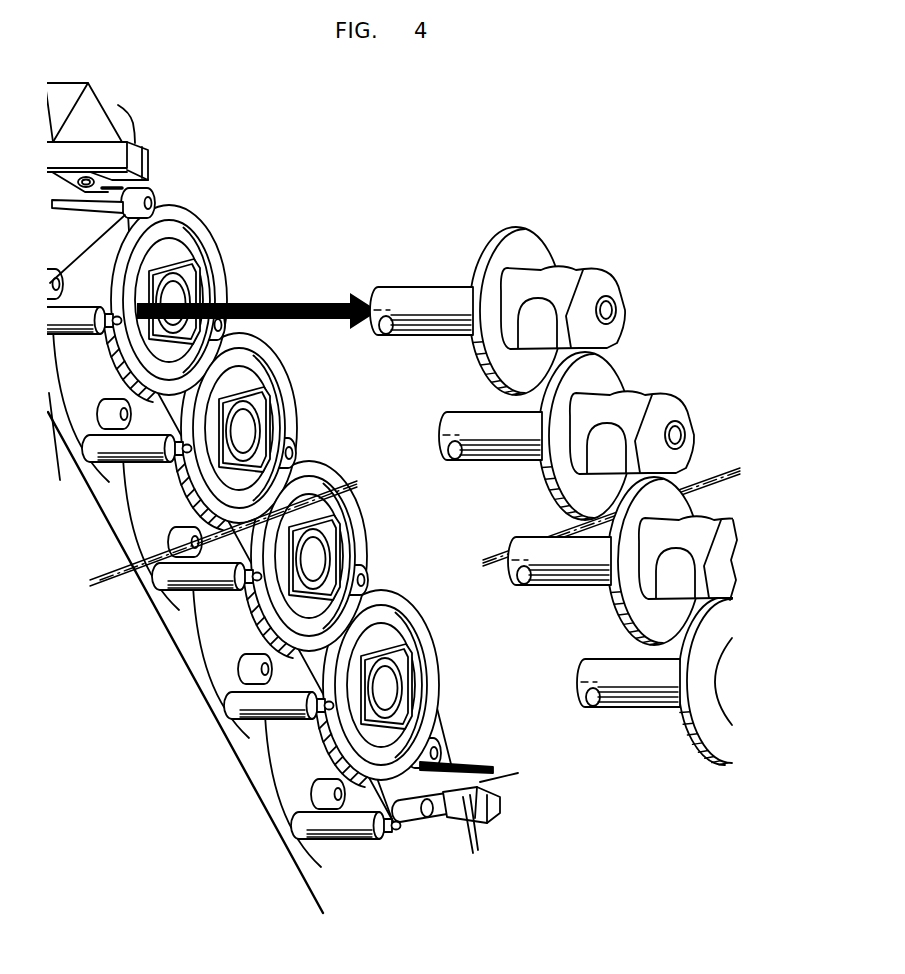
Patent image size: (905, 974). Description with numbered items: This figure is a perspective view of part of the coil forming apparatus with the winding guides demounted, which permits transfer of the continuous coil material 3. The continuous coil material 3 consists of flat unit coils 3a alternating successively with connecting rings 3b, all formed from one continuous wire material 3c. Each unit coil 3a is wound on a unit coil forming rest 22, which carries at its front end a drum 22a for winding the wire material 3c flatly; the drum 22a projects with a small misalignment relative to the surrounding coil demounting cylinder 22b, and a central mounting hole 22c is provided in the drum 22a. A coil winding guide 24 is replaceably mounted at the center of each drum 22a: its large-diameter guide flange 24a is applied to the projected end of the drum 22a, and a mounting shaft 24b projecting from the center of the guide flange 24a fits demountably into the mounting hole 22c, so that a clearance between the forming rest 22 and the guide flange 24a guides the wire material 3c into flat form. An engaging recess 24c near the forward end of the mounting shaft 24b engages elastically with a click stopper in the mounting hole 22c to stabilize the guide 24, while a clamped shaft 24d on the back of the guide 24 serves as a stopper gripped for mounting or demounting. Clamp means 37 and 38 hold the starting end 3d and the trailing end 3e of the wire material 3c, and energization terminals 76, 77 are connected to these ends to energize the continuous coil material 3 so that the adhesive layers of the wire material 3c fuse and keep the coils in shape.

The continuous coil material 3 is at (225, 693).
The unit coil 3a is at (175, 263).
The connecting ring 3b is at (120, 318).
The wire material 3c is at (375, 827).
The starting end of the wire material 3d is at (510, 772).
The trailing end of the wire material 3e is at (130, 120).
The unit coil forming rest 22 is at (160, 477).
The drum 22a is at (182, 270).
The coil demounting cylinder 22b is at (205, 295).
The central mounting hole 22c is at (190, 290).
The coil winding guide 24 is at (490, 393).
The guide flange 24a is at (497, 355).
The mounting shaft 24b is at (422, 305).
The engaging recess 24c is at (390, 333).
The clamped shaft 24d is at (580, 268).
The clamp means 37 is at (495, 822).
The clamp means 38 is at (157, 170).
The energization terminal 76 is at (463, 833).
The energization terminal 77 is at (80, 220).